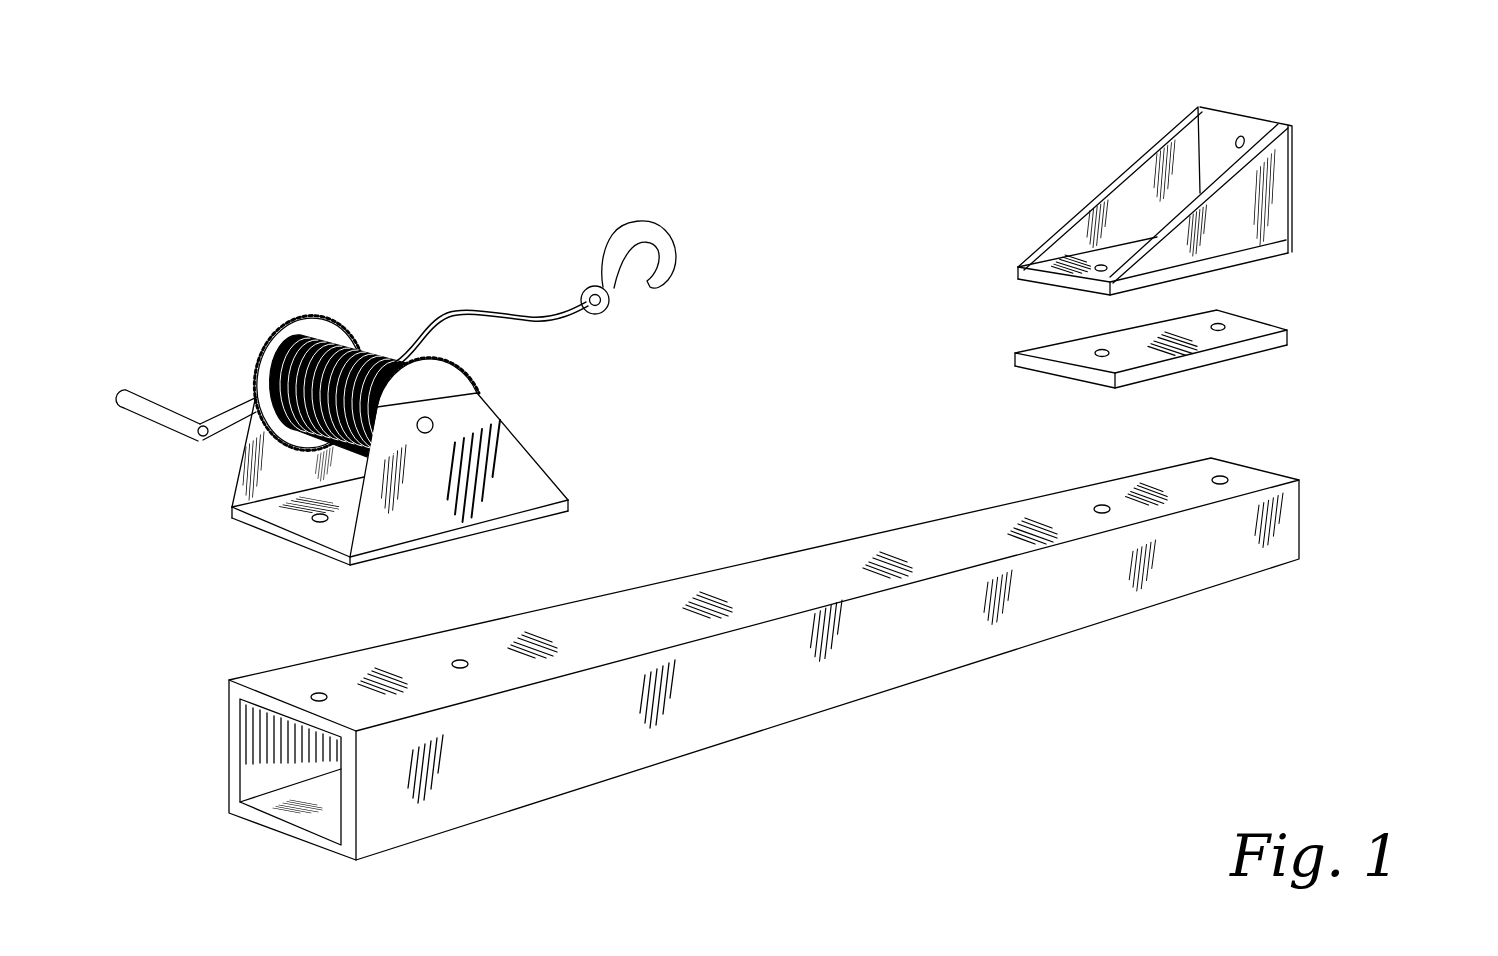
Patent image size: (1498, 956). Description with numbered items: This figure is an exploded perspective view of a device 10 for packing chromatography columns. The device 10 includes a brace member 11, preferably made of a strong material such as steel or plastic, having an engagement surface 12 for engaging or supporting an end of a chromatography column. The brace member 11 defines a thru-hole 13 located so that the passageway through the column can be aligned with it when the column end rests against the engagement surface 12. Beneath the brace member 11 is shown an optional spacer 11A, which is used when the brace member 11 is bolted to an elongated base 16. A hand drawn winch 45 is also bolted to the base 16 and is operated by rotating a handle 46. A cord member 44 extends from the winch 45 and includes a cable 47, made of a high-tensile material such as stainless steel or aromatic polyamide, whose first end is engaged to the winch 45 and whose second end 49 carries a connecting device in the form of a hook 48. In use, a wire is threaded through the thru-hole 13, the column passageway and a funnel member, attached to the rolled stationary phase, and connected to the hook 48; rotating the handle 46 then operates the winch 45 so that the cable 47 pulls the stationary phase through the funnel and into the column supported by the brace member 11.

The device 10 is at (1364, 523).
The brace member 11 is at (1216, 160).
The spacer 11A is at (1290, 335).
The engagement surface 12 is at (1293, 185).
The thru-hole 13 is at (1240, 136).
The base 16 is at (732, 740).
The cord member 44 is at (527, 318).
The hand drawn winch 45 is at (562, 492).
The handle 46 is at (170, 410).
The cable 47 is at (480, 310).
The hook 48 is at (670, 232).
The second end 49 is at (578, 313).